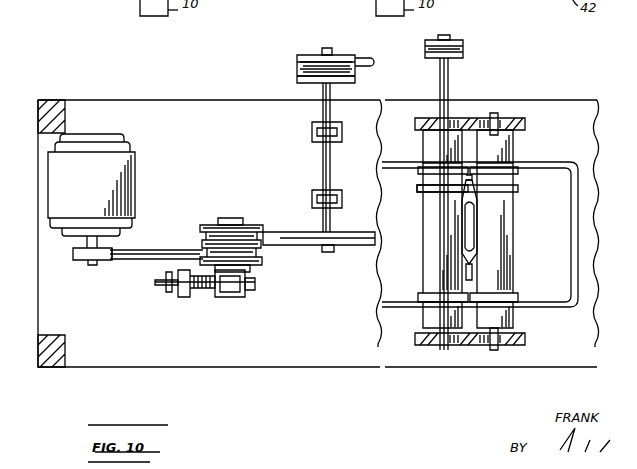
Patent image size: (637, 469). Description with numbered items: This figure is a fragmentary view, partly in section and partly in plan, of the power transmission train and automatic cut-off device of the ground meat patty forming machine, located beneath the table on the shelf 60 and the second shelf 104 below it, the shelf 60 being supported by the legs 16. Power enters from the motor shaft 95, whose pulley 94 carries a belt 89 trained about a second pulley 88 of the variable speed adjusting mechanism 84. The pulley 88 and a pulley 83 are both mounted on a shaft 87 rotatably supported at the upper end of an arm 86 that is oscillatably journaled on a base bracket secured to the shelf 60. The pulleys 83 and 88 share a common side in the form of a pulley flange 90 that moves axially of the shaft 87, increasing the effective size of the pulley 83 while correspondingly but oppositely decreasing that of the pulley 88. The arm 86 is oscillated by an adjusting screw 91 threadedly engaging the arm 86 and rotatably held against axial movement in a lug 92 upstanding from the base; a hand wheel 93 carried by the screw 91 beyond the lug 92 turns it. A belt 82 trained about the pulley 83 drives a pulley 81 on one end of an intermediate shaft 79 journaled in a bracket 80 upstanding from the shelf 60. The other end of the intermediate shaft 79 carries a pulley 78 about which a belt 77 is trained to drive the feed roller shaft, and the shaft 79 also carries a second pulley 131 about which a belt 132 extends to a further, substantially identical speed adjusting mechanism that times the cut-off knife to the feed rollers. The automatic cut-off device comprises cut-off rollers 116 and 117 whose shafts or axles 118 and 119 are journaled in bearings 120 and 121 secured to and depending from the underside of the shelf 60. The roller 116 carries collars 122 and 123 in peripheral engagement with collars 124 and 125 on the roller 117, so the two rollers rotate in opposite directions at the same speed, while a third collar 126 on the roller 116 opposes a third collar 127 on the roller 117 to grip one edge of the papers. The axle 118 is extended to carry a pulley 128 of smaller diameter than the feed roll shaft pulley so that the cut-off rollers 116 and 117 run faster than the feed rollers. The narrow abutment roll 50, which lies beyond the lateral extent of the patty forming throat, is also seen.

The legs 16 is at (48, 106).
The abutment roll 50 is at (478, 225).
The shelf 60 is at (272, 367).
The belt 77 is at (372, 60).
The pulley 78 is at (335, 55).
The intermediate shaft 79 is at (333, 113).
The bracket 80 is at (333, 170).
The pulley 81 is at (328, 253).
The belt 82 is at (272, 232).
The pulley 83 is at (244, 222).
The speed adjusting mechanism 84 is at (288, 316).
The arm 86 is at (252, 291).
The shaft 87 is at (232, 298).
The second pulley 88 is at (258, 262).
The belt 89 is at (158, 252).
The pulley flange 90 is at (200, 240).
The adjusting screw 91 is at (205, 290).
The lug 92 is at (185, 292).
The hand wheel 93 is at (165, 287).
The pulley 94 is at (103, 262).
The motor shaft 95 is at (88, 266).
The second shelf 104 is at (598, 116).
The cut-off roller 116 is at (428, 148).
The cut-off roller 117 is at (515, 152).
The shaft or axle 118 is at (440, 348).
The shaft or axle 119 is at (500, 348).
The bearing 120 is at (478, 118).
The bearing 121 is at (462, 342).
The collar 122 is at (418, 170).
The collar 123 is at (418, 298).
The collar 124 is at (520, 170).
The collar 125 is at (518, 297).
The gripping collar 126 is at (430, 200).
The gripping collar 127 is at (520, 190).
The pulley 128 is at (458, 38).
The second pulley 131 is at (303, 85).
The belt 132 is at (358, 76).